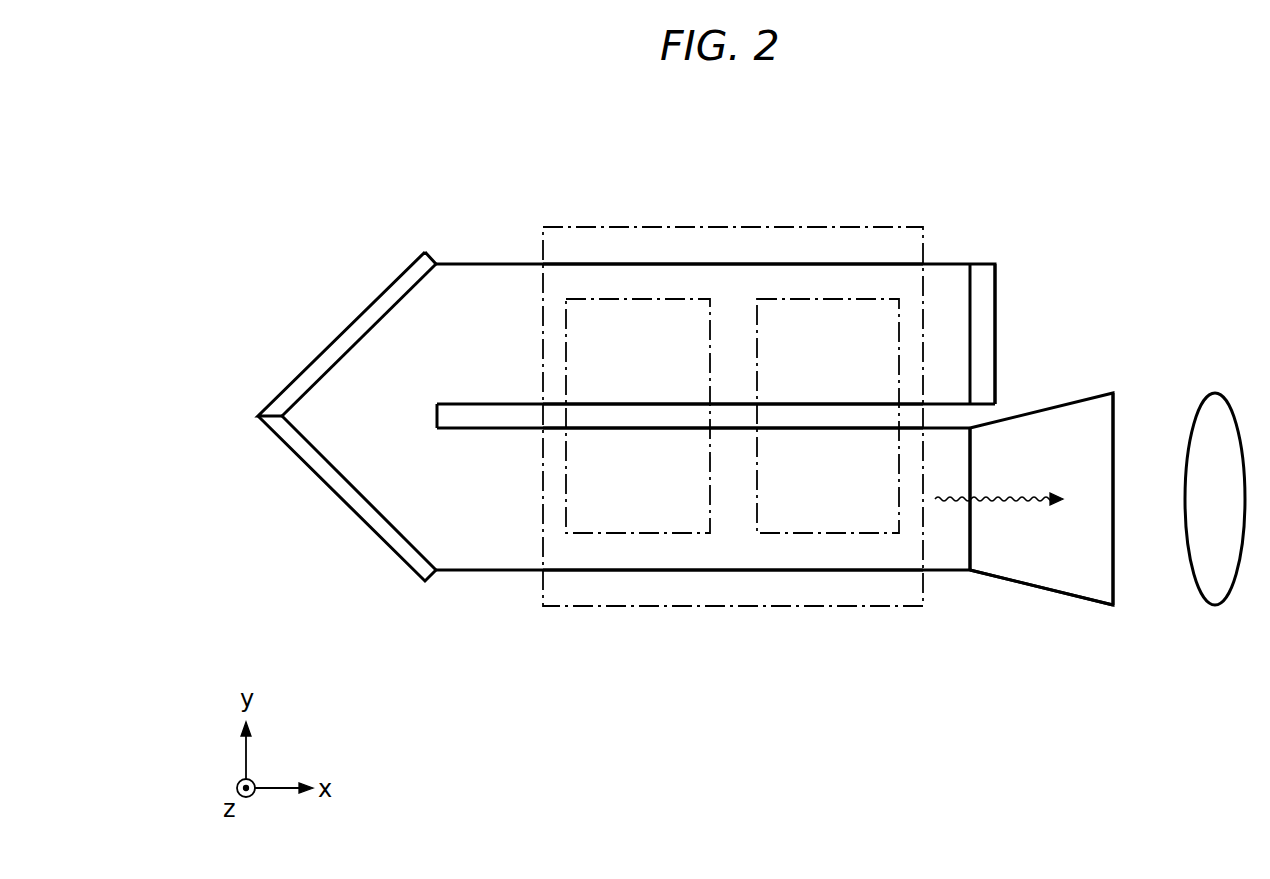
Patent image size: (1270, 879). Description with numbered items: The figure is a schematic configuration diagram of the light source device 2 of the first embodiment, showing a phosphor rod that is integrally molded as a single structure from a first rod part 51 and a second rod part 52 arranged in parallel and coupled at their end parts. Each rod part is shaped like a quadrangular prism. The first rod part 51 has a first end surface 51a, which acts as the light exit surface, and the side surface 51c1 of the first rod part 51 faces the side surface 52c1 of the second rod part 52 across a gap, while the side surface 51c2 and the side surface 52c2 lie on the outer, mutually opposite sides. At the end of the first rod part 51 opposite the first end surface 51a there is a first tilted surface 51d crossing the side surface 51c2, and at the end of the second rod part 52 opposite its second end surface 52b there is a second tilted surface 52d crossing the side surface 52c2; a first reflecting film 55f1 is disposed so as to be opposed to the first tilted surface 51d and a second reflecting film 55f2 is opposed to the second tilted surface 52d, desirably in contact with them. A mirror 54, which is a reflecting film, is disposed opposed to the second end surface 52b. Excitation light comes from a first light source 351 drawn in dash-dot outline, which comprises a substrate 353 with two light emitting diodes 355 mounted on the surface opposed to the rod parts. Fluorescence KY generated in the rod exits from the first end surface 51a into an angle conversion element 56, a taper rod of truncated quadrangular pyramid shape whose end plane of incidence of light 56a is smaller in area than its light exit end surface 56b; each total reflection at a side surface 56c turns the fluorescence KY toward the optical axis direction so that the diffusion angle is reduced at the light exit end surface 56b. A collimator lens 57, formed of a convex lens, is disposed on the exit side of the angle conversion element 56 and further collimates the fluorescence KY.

The light source device 2 is at (1058, 155).
The first rod part 51 is at (488, 558).
The second rod part 52 is at (488, 275).
The first end surface 51a is at (972, 540).
The side surface 51c1 is at (627, 427).
The side surface 51c2 is at (892, 570).
The first tilted surface 51d is at (388, 525).
The second end surface 52b is at (973, 293).
The side surface 52c1 is at (840, 405).
The side surface 52c2 is at (887, 263).
The second tilted surface 52d is at (388, 308).
The mirror 54 is at (988, 308).
The first reflecting film 55f1 is at (342, 487).
The second reflecting film 55f2 is at (342, 345).
The angle conversion element 56 is at (1088, 587).
The end plane of incidence of light 56a is at (970, 558).
The light exit end surface 56b is at (1117, 557).
The side surface 56c is at (1040, 590).
The collimator lens 57 is at (1215, 597).
The first light source 351 is at (605, 227).
The substrate 353 is at (735, 240).
The light emitting diodes 355 is at (650, 310).
The fluorescence KY is at (1022, 493).